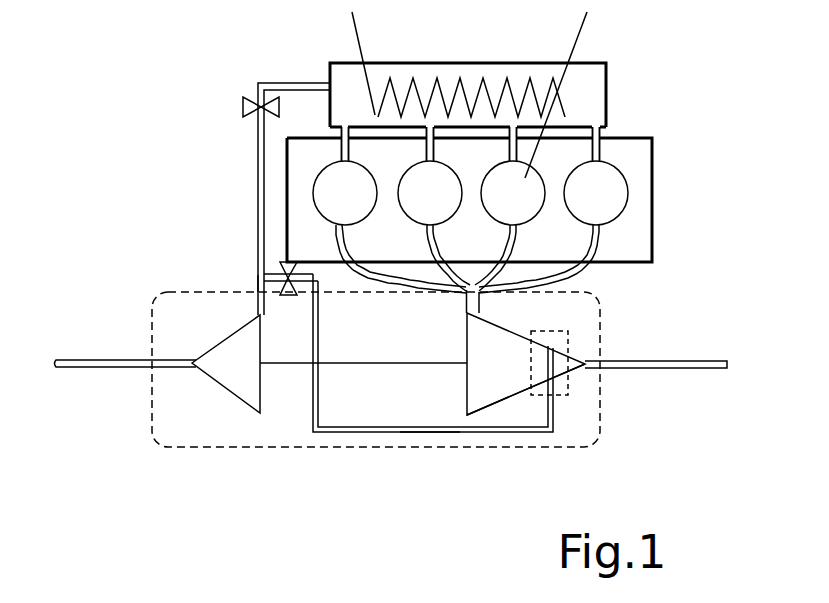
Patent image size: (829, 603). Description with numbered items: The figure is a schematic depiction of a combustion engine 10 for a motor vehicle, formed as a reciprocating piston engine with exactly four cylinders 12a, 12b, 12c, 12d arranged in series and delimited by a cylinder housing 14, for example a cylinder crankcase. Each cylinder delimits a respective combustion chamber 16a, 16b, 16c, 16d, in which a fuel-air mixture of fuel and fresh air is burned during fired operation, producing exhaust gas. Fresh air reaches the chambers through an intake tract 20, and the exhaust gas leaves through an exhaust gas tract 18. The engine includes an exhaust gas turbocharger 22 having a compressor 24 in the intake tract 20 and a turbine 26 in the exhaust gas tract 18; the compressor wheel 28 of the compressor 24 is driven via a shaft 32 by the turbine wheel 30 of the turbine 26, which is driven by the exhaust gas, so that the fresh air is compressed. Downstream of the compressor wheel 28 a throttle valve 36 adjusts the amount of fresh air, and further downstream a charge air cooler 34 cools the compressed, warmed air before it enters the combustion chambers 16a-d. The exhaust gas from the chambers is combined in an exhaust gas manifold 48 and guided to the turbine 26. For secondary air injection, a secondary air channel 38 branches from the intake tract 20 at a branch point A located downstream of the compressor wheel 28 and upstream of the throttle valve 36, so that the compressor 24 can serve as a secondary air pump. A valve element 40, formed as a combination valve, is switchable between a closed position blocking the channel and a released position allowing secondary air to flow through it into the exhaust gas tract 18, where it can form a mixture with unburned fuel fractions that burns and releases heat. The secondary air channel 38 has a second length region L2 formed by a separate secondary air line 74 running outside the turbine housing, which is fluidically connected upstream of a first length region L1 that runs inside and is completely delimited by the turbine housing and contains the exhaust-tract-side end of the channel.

The combustion engine 10 is at (654, 253).
The cylinder 12a is at (322, 198).
The cylinder 12b is at (442, 175).
The cylinder 12c is at (525, 178).
The cylinder 12d is at (600, 183).
The cylinder housing 14 is at (642, 218).
The combustion chamber 16a is at (318, 180).
The combustion chamber 16b is at (422, 200).
The combustion chamber 16c is at (520, 208).
The combustion chamber 16d is at (620, 188).
The exhaust gas tract 18 is at (650, 370).
The intake tract 20 is at (93, 370).
The exhaust gas turbocharger 22 is at (202, 425).
The compressor 24 is at (240, 410).
The turbine 26 is at (492, 408).
The compressor wheel 28 is at (258, 393).
The turbine wheel 30 is at (503, 387).
The shaft 32 is at (400, 367).
The charge air cooler 34 is at (338, 73).
The throttle valve 36 is at (243, 106).
The secondary air channel 38 is at (358, 440).
The valve element 40 is at (256, 272).
The exhaust gas manifold 48 is at (604, 264).
The secondary air line 74 is at (323, 333).
The branch point A is at (252, 283).
The first length region L1 is at (553, 360).
The second length region L2 is at (428, 432).